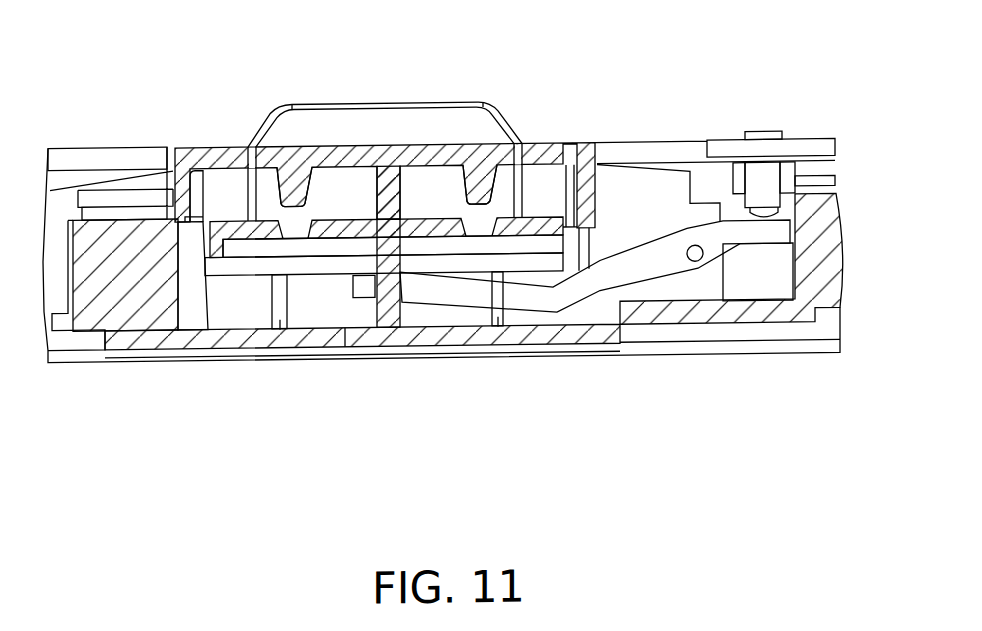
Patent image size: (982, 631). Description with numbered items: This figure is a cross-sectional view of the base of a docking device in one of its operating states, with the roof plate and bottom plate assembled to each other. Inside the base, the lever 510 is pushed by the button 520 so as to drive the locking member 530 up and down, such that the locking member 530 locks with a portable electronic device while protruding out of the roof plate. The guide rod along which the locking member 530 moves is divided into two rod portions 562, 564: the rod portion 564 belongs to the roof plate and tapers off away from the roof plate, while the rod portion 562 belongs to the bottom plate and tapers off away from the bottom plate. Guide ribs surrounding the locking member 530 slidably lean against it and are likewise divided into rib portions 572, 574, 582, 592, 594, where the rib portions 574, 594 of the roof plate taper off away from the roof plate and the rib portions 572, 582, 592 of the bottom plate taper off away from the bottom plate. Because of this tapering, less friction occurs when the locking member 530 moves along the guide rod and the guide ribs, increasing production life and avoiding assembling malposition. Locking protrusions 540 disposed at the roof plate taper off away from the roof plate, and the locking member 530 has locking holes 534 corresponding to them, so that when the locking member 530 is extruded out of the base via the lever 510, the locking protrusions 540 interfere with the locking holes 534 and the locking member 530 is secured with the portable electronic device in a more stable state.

The lever 510 is at (648, 270).
The button 520 is at (770, 176).
The locking member 530 is at (452, 124).
The locking holes 534 is at (293, 228).
The locking protrusions 540 is at (293, 184).
The rod portion 562 is at (388, 293).
The rod portion 564 is at (388, 183).
The rib portion 572 is at (192, 303).
The rib portion 574 is at (197, 187).
The rib portion 582 is at (280, 321).
The rib portion 592 is at (583, 256).
The rib portion 594 is at (568, 152).